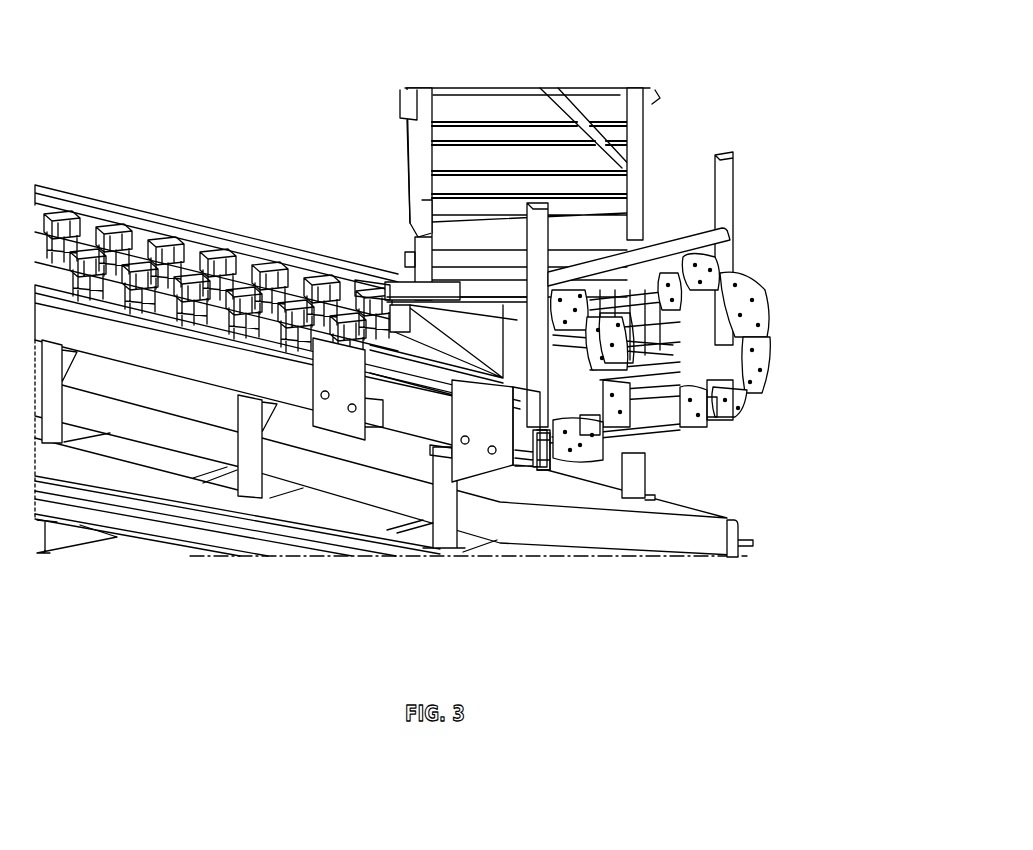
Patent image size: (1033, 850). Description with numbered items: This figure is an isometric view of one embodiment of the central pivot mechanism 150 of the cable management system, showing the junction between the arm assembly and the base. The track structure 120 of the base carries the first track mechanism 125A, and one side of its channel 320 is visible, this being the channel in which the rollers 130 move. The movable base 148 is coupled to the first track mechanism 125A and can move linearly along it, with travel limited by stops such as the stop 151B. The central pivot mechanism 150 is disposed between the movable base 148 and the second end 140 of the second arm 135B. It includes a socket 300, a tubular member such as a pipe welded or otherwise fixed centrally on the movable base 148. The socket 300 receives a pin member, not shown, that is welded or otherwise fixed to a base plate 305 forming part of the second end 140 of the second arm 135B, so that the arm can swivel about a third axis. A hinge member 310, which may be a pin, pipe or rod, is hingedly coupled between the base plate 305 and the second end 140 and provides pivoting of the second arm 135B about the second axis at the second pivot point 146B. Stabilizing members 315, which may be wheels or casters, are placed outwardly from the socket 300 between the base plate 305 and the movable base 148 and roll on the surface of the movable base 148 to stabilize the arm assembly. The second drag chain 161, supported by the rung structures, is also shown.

The track structure 120 is at (189, 381).
The first track mechanism 125A is at (540, 455).
The rollers 130 is at (376, 429).
The second arm 135B is at (645, 112).
The second end 140 is at (650, 155).
The second pivot point 146B is at (400, 183).
The movable base 148 is at (395, 347).
The central pivot mechanism 150 is at (445, 378).
The stop 151B is at (736, 165).
The second drag chain 161 is at (768, 300).
The socket 300 is at (587, 425).
The base plate 305 is at (385, 275).
The hinge member 310 is at (397, 243).
The stabilizing members 315 is at (355, 278).
The channel 320 is at (444, 455).